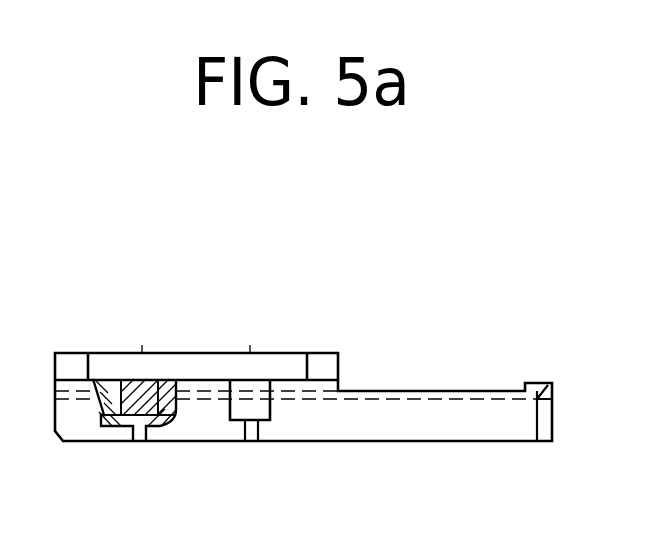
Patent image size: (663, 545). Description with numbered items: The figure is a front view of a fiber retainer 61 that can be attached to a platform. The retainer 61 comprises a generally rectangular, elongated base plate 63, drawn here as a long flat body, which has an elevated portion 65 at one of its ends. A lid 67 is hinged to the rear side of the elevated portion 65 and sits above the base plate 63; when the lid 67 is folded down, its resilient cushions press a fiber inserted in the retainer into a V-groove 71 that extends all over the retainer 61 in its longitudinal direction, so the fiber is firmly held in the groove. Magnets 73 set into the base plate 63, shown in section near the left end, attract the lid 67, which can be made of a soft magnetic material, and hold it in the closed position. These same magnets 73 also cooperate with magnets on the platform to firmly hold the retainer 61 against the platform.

The retainer 61 is at (254, 268).
The base plate 63 is at (350, 428).
The elevated portion 65 is at (205, 392).
The lid 67 is at (220, 365).
The V-groove 71 is at (500, 402).
The magnets 73 is at (132, 379).